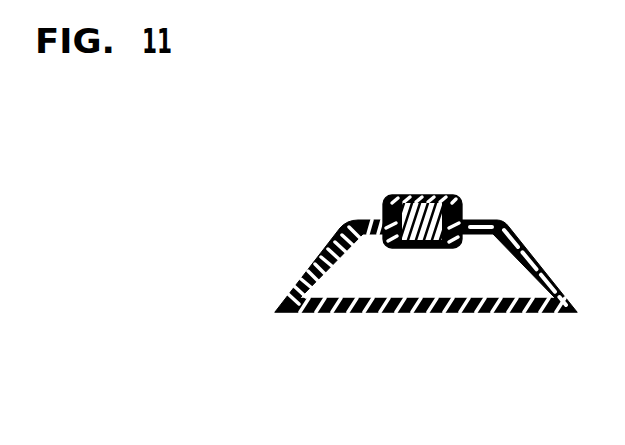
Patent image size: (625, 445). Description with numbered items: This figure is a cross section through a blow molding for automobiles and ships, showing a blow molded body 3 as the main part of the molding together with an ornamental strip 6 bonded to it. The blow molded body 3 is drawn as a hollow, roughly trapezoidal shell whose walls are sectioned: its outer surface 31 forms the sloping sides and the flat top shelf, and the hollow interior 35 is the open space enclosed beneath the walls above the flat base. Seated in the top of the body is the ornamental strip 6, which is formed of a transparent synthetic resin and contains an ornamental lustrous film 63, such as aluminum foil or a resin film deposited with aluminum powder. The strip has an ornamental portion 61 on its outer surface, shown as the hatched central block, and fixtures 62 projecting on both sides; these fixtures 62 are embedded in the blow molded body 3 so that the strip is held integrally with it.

The blow molded body 3 is at (300, 281).
The outer surface 31 is at (360, 221).
The hollow interior 35 is at (330, 285).
The ornamental strip 6 is at (462, 201).
The ornamental portion 61 is at (425, 196).
The fixtures 62 is at (384, 246).
The ornamental lustrous film 63 is at (395, 197).